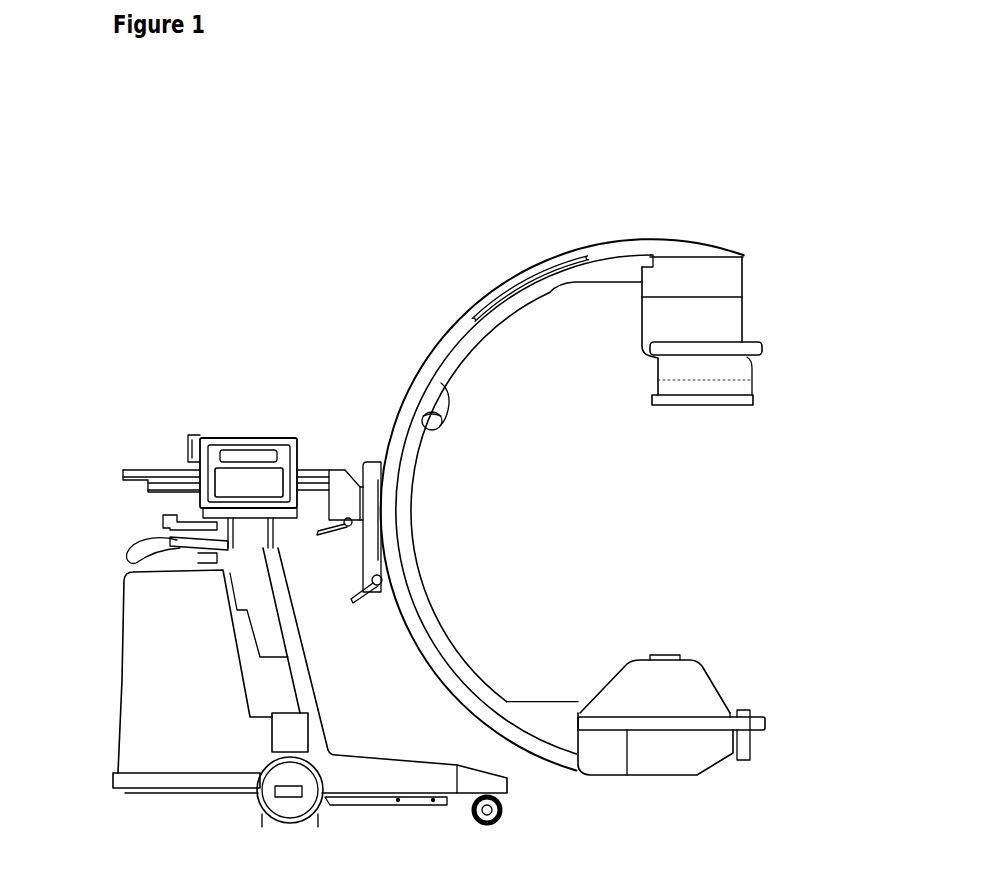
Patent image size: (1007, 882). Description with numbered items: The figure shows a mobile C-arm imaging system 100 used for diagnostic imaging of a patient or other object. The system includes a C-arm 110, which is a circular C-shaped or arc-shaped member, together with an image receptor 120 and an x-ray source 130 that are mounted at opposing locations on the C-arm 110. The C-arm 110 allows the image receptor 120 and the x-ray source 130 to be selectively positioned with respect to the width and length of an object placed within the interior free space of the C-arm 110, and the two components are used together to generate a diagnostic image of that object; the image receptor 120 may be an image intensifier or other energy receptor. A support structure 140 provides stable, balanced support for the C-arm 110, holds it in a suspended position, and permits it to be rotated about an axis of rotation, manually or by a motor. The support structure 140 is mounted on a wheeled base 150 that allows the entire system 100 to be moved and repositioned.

The mobile C-arm imaging system 100 is at (170, 128).
The C-arm 110 is at (420, 342).
The image receptor 120 is at (773, 382).
The x-ray source 130 is at (743, 682).
The support structure 140 is at (250, 430).
The wheeled base 150 is at (100, 766).